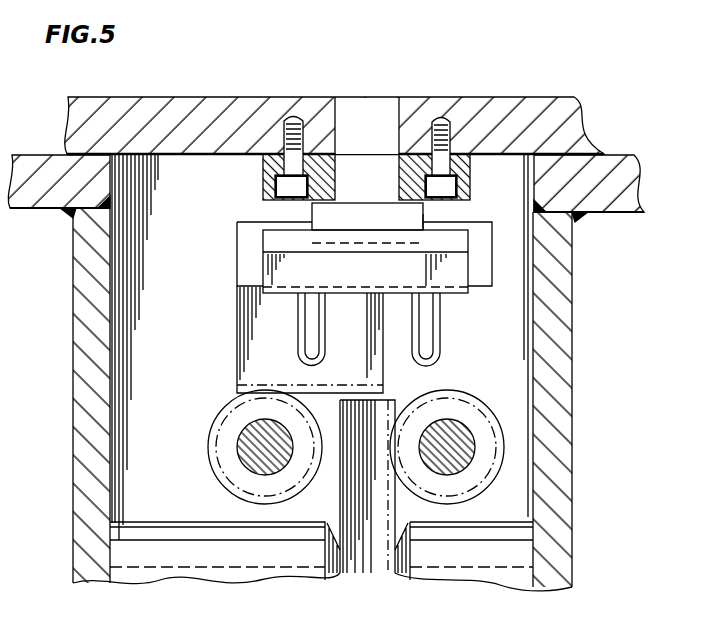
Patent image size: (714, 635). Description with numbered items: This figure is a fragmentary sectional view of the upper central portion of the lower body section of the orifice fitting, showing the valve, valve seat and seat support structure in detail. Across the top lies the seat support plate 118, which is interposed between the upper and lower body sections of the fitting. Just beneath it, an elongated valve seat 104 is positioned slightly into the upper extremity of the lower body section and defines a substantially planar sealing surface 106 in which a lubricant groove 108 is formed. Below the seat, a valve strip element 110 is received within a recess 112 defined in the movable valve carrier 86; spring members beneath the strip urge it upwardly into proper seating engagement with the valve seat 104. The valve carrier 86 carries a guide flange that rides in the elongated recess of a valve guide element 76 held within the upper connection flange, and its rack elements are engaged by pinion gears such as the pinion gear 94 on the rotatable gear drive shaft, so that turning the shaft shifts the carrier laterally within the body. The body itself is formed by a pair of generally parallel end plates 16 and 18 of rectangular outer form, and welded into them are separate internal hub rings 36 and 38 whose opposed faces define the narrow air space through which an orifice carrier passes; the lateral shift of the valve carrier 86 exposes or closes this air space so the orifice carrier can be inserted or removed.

The seat support plate 118 is at (481, 103).
The sealing surface 106 is at (270, 203).
The valve seat 104 is at (471, 184).
The lubricant groove 108 is at (323, 199).
The valve strip element 110 is at (364, 225).
The recess 112 is at (421, 221).
The valve guide element 76 is at (270, 240).
The valve carrier 86 is at (242, 268).
The end plate 16 is at (111, 342).
The end plate 18 is at (531, 341).
The pinion gear 94 is at (207, 441).
The hub ring 36 is at (133, 522).
The hub ring 38 is at (499, 520).